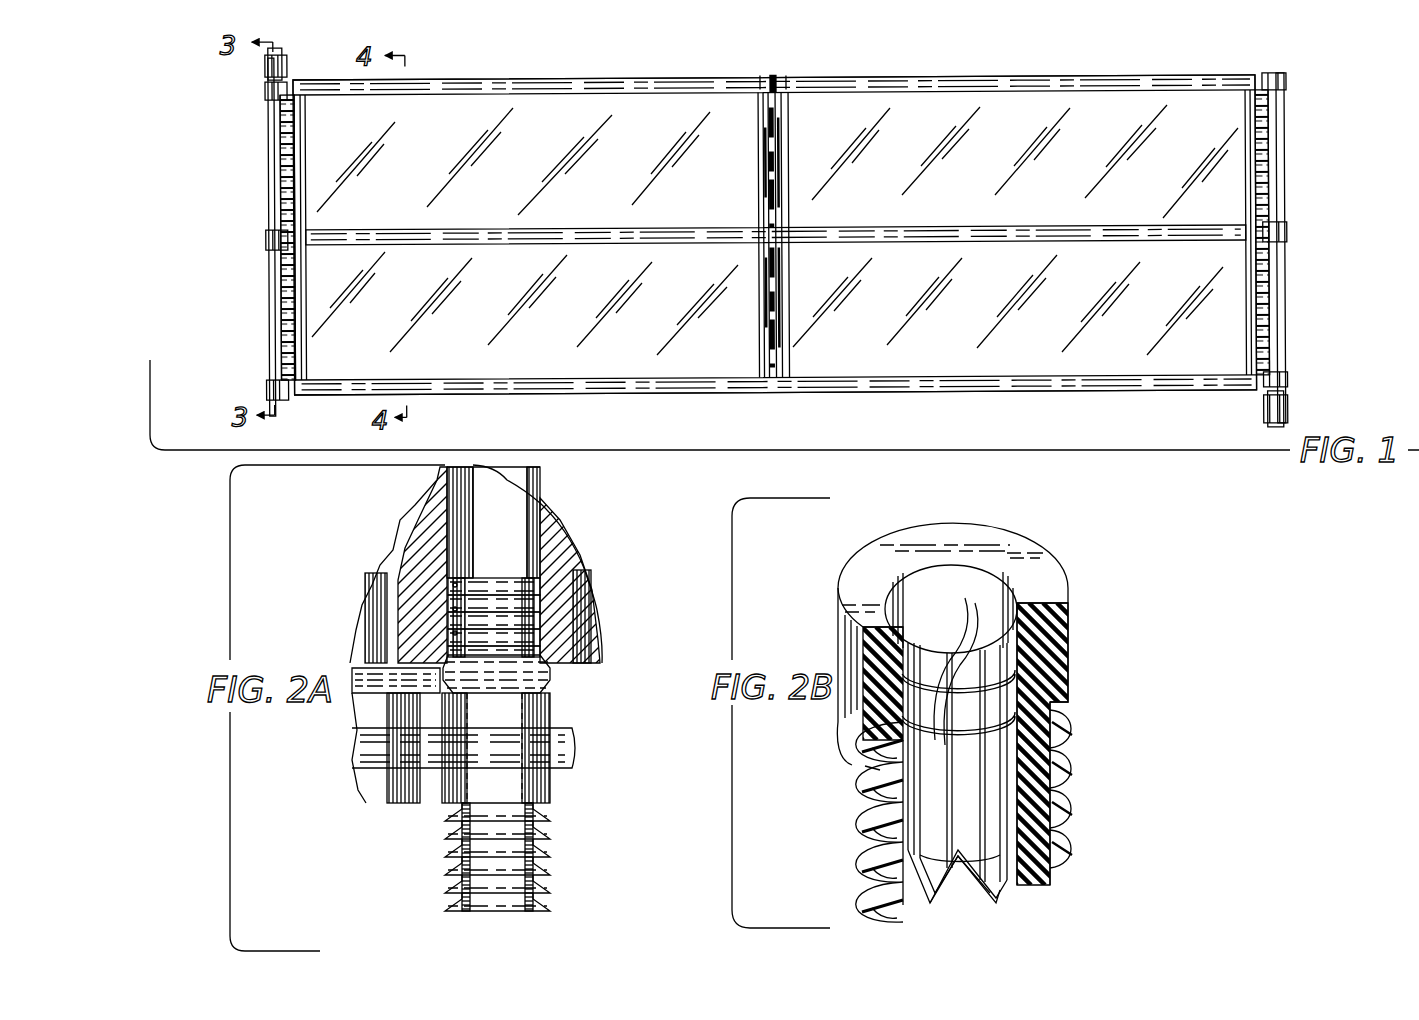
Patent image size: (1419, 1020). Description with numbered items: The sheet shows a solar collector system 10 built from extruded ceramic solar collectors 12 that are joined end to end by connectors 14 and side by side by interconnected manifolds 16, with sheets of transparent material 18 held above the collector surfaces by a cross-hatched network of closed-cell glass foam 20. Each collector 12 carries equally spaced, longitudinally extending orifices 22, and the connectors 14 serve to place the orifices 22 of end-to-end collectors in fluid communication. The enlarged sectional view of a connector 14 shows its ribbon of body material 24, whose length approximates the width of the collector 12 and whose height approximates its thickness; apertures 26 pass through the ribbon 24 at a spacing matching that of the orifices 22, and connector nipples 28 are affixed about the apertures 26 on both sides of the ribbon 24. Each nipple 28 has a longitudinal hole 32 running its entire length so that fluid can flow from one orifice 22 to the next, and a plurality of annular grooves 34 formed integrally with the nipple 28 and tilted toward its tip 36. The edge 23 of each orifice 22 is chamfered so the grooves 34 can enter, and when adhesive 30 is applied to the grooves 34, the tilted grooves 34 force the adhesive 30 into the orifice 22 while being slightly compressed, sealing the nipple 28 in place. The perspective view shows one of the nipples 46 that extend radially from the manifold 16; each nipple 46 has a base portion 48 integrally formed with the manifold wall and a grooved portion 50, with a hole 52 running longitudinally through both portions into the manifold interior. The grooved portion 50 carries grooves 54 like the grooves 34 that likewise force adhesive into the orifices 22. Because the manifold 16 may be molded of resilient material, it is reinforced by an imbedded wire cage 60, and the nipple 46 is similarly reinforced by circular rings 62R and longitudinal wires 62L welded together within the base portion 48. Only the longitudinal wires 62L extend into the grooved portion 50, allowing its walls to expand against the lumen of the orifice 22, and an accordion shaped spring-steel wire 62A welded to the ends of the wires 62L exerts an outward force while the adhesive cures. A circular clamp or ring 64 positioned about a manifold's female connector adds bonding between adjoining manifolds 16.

In FIG. 1, the solar collector system 10 is at (732, 68).
In FIG. 1, the solar collector 12 is at (537, 108).
In FIG. 1, the connector 14 is at (773, 78).
In FIG. 2A, the connector 14 is at (576, 708).
In FIG. 1, the manifold 16 is at (268, 184).
In FIG. 1, the sheet of transparent material 18 is at (530, 180).
In FIG. 1, the closed-cell glass foam 20 is at (646, 74).
In FIG. 2A, the longitudinally extending orifice 22 is at (512, 493).
In FIG. 2A, the edge of the orifice 23 is at (550, 666).
In FIG. 2A, the ribbon of body material 24 is at (365, 755).
In FIG. 2A, the aperture 26 is at (520, 741).
In FIG. 2A, the connector nipple 28 is at (442, 906).
In FIG. 2A, the adhesive 30 is at (525, 628).
In FIG. 2A, the longitudinal hole 32 is at (575, 549).
In FIG. 2A, the annular grooves 34 is at (455, 630).
In FIG. 2A, the tip of the nipple 36 is at (497, 580).
In FIG. 2B, the manifold nipple 46 is at (1080, 593).
In FIG. 2B, the base portion 48 is at (1070, 641).
In FIG. 2B, the grooved portion 50 is at (840, 753).
In FIG. 2B, the hole 52 is at (965, 800).
In FIG. 2B, the grooves 54 is at (880, 800).
In FIG. 2B, the wire cage 60 is at (968, 645).
In FIG. 2B, the circular rings 62R is at (950, 662).
In FIG. 2B, the longitudinal wires 62L is at (1040, 753).
In FIG. 2B, the accordion shaped wire 62A is at (982, 900).
In FIG. 1, the circular clamp or ring 64 is at (265, 88).